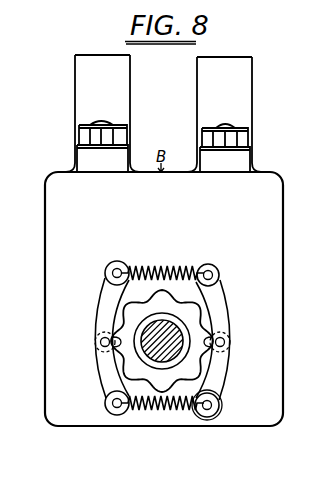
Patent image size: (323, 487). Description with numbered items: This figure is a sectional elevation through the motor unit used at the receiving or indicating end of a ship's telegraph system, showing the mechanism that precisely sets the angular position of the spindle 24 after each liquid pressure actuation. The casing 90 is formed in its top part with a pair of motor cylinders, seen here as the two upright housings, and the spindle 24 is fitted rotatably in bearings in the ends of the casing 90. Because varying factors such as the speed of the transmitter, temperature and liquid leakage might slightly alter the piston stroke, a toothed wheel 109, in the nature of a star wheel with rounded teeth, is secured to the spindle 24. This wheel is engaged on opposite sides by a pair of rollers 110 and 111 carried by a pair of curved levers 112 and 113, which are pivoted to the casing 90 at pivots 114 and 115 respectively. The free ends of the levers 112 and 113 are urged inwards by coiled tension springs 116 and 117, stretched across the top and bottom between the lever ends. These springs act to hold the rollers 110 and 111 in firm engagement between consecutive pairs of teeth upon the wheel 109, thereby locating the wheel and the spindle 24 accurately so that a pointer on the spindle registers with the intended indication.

The casing 90 is at (257, 183).
The toothed wheel 109 is at (200, 296).
The roller 110 is at (101, 337).
The roller 111 is at (226, 343).
The curved lever 112 is at (104, 373).
The curved lever 113 is at (222, 311).
The pivot 114 is at (119, 266).
The pivot 115 is at (210, 405).
The coiled tension spring 116 is at (160, 412).
The coiled tension spring 117 is at (178, 268).
The spindle 24 is at (155, 346).